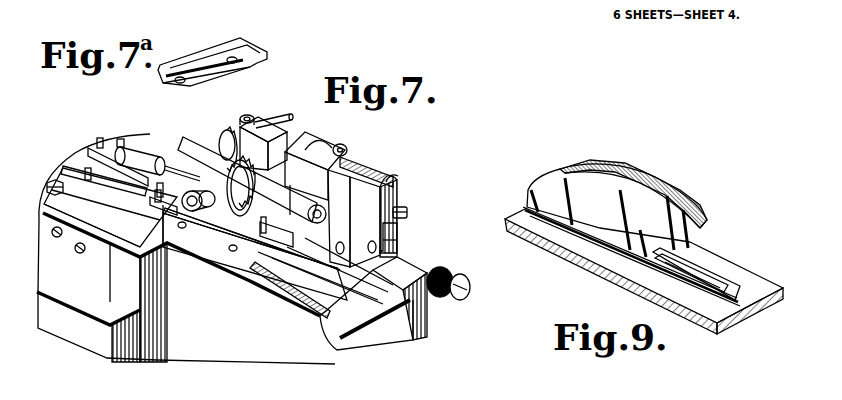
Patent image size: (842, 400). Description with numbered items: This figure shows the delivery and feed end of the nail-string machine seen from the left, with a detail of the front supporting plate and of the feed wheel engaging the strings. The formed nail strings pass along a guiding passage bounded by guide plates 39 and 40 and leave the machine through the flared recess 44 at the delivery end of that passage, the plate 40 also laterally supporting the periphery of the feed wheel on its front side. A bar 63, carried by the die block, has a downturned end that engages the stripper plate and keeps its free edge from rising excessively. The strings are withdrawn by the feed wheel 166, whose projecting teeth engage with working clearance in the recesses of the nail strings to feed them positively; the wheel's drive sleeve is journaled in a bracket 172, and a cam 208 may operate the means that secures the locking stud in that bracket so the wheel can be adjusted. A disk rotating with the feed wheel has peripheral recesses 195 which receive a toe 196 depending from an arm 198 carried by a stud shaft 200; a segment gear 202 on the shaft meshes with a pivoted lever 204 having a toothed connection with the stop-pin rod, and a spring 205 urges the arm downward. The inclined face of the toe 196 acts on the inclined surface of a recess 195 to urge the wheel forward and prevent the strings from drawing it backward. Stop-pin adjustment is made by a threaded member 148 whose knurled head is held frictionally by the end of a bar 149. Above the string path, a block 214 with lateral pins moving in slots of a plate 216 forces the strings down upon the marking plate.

In FIG. 7, the guide plate 39 is at (143, 207).
In FIG. 7, the guide plate 40 is at (257, 238).
In FIG. 7A, the guide plate 40 is at (213, 50).
In FIG. 7, the flared recess 44 is at (393, 317).
In FIG. 7, the bar 63 is at (100, 145).
In FIG. 7, the threaded member 148 is at (123, 145).
In FIG. 7, the bar 149 is at (172, 208).
In FIG. 7, the feed wheel 166 is at (222, 224).
In FIG. 9, the feed wheel 166 is at (673, 207).
In FIG. 7, the bracket 172 is at (285, 133).
In FIG. 7, the peripheral recesses 195 is at (312, 143).
In FIG. 7, the toe 196 is at (217, 158).
In FIG. 7, the arm 198 is at (345, 163).
In FIG. 7, the stud shaft 200 is at (398, 182).
In FIG. 7, the segment gear 202 is at (407, 208).
In FIG. 7, the pivoted lever 204 is at (397, 241).
In FIG. 7, the spring 205 is at (287, 244).
In FIG. 7, the cam 208 is at (248, 114).
In FIG. 7, the block 214 is at (90, 157).
In FIG. 7, the plate 216 is at (133, 197).